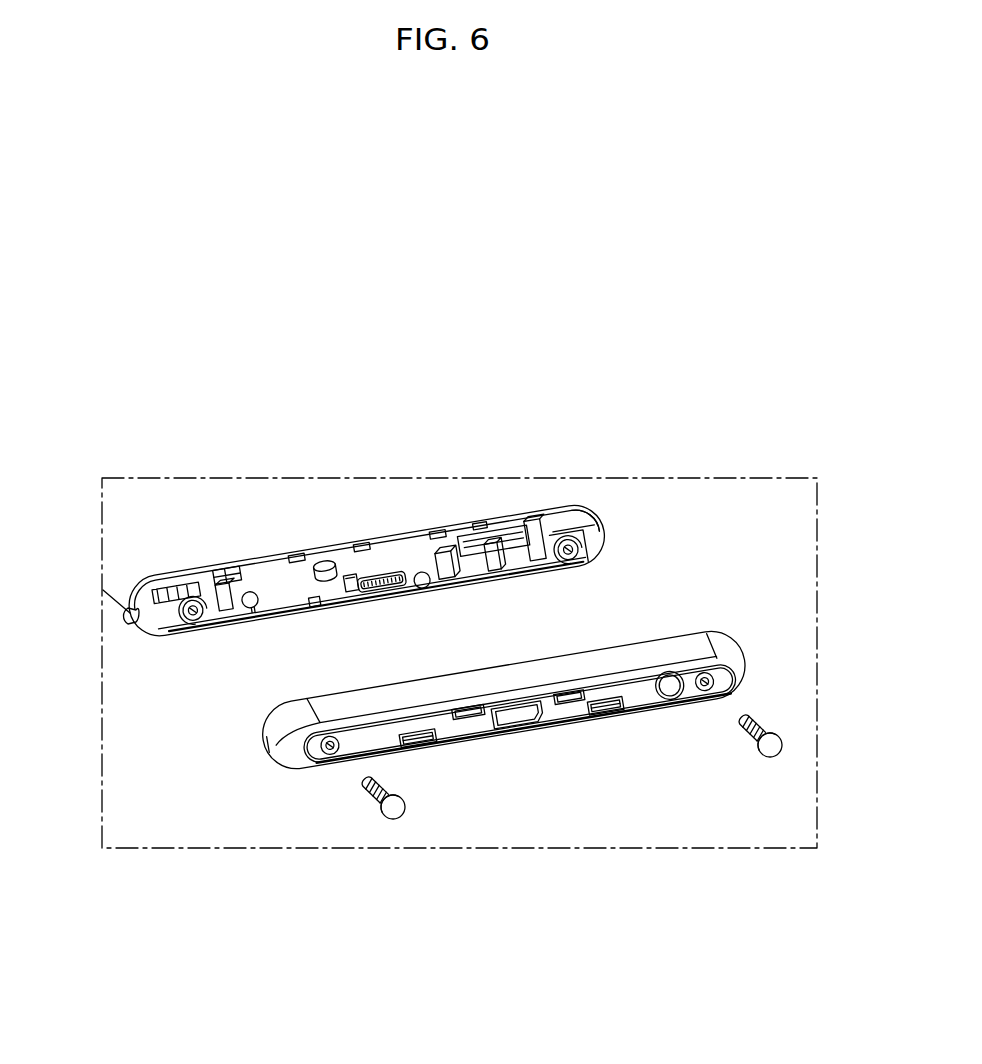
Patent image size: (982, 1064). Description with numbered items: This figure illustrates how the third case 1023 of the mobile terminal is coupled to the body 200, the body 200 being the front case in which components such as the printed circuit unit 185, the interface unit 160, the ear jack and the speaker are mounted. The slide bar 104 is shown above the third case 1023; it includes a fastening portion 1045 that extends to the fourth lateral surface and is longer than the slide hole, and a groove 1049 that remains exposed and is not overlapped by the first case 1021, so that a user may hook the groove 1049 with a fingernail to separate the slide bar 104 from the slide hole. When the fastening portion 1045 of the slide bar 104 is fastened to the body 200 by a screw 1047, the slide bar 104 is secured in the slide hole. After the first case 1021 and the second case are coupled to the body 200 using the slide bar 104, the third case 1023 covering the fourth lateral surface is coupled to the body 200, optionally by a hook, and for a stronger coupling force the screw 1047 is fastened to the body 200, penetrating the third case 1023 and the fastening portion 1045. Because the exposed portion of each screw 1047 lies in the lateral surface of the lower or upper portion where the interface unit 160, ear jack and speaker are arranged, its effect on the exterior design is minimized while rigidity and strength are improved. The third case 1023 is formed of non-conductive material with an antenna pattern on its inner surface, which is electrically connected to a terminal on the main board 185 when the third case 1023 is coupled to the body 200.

The first case 1021 is at (257, 497).
The slide bar 104 is at (147, 630).
The groove (hook) 1049 is at (132, 612).
The fastening portion 1045 is at (199, 619).
The printed circuit unit (main board) 185 is at (352, 577).
The interface unit 160 is at (396, 584).
The body 200 is at (617, 538).
The third case 1023 is at (740, 650).
The screw 1047 is at (393, 820).